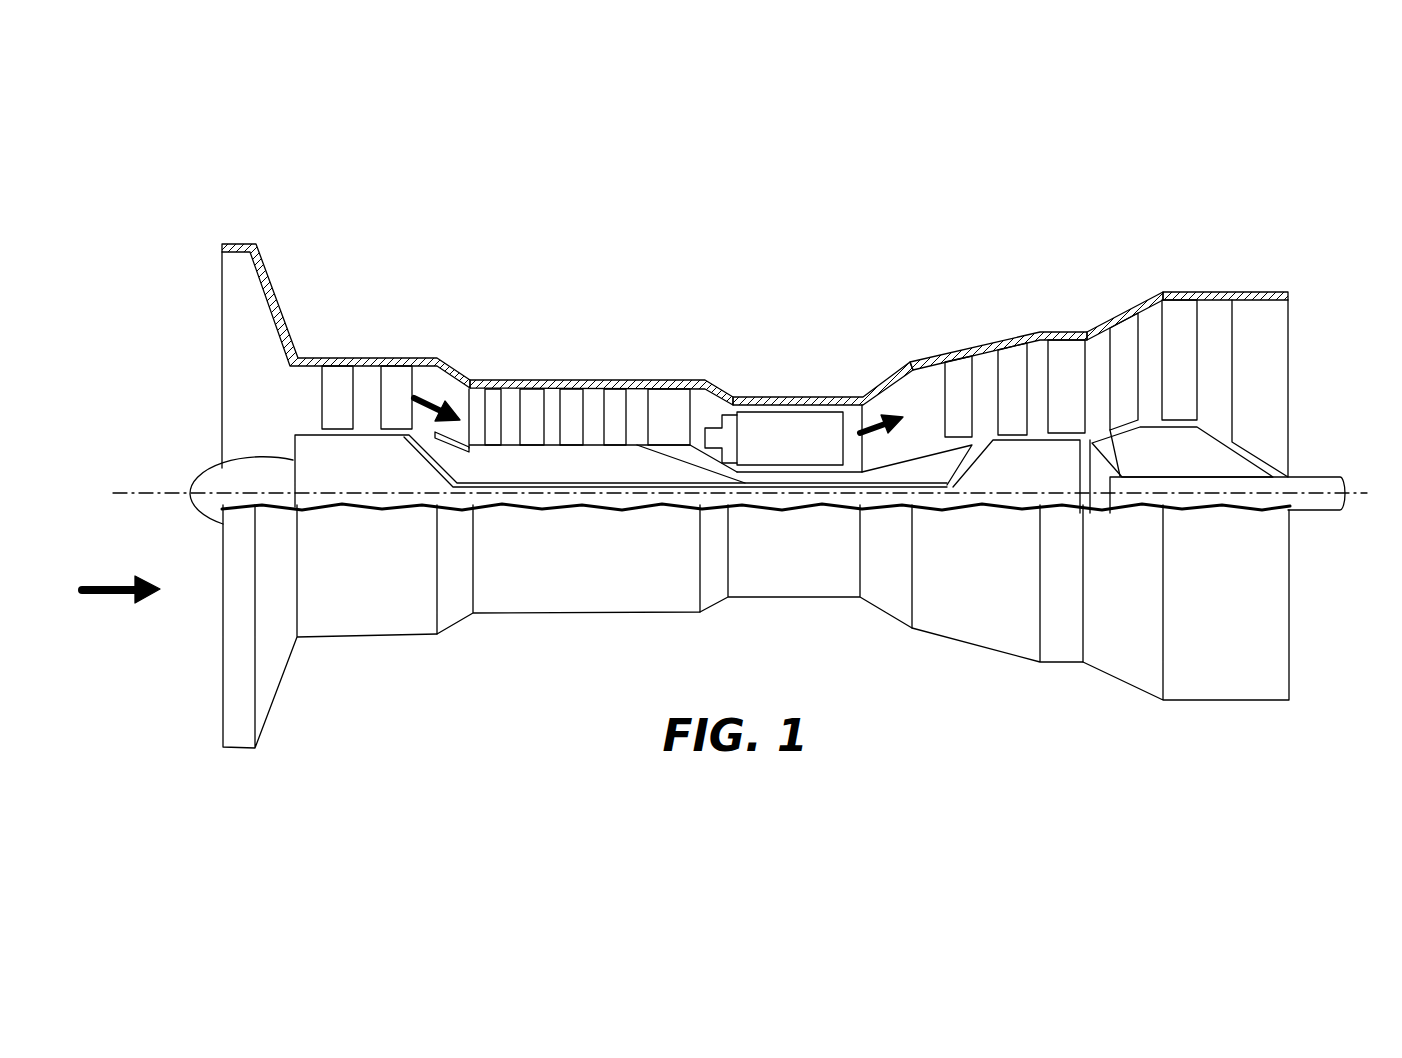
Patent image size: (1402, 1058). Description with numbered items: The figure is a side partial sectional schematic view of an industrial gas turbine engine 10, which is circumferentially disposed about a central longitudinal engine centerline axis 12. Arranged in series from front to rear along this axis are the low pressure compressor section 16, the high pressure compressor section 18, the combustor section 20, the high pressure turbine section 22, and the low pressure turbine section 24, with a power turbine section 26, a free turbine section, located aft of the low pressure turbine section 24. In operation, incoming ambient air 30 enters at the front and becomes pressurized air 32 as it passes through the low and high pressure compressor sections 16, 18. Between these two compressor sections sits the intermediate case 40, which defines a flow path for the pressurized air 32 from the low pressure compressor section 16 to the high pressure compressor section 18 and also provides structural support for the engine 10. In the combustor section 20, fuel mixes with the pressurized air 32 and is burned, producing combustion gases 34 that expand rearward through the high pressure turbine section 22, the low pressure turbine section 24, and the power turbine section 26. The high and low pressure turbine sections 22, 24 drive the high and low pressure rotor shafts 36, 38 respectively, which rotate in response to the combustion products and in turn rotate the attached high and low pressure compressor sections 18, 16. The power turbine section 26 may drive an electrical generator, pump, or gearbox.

The gas turbine engine 10 is at (862, 238).
The engine centerline axis 12 is at (157, 492).
The low pressure compressor section 16 is at (357, 344).
The high pressure compressor section 18 is at (607, 352).
The combustor section 20 is at (758, 394).
The high pressure turbine section 22 is at (960, 348).
The low pressure turbine section 24 is at (1072, 312).
The power turbine section 26 is at (1225, 287).
The incoming ambient air 30 is at (118, 583).
The pressurized air 32 is at (440, 403).
The combustion gases 34 is at (875, 430).
The high pressure rotor shaft 36 is at (688, 460).
The low pressure rotor shaft 38 is at (447, 470).
The intermediate case 40 is at (445, 362).